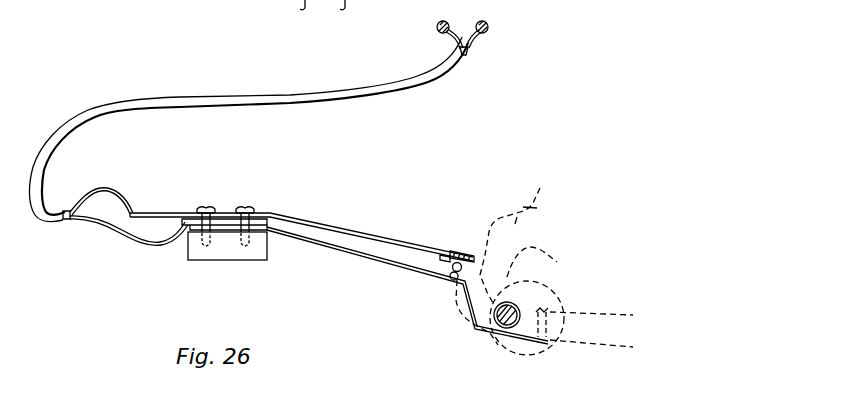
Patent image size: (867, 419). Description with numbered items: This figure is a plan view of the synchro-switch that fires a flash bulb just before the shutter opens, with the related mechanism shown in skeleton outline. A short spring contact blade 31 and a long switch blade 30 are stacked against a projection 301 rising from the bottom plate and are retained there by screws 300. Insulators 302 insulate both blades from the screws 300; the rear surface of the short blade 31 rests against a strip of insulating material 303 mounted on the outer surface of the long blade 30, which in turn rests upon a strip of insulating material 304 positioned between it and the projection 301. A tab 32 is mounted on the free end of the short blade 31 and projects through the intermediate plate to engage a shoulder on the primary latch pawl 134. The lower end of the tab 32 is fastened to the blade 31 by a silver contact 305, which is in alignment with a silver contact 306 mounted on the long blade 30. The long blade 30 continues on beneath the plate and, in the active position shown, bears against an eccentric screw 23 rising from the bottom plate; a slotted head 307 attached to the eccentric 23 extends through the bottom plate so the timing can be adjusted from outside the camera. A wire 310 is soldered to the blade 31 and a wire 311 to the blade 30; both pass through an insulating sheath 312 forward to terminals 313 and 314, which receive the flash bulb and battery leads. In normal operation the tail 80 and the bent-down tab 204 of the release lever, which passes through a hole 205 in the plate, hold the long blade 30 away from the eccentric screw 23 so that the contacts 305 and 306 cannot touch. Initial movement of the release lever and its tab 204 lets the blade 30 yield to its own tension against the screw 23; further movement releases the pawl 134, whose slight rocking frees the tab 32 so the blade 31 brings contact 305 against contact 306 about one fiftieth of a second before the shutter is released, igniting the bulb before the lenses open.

The eccentric screw 23 is at (511, 318).
The long switch blade 30 is at (376, 259).
The short spring contact blade 31 is at (374, 236).
The tab 32 is at (462, 251).
The tail 80 is at (597, 334).
The primary latch pawl 134 is at (504, 259).
The tab 204 is at (567, 303).
The hole 205 is at (528, 349).
The screws 300 is at (212, 208).
The projection 301 is at (243, 262).
The insulators 302 is at (199, 209).
The strip of insulating material 303 is at (223, 220).
The strip of insulating material 304 is at (225, 245).
The silver contact 305 is at (447, 259).
The silver contact 306 is at (462, 274).
The slotted head 307 is at (504, 304).
The wire 310 is at (105, 190).
The wire 311 is at (125, 231).
The insulating sheath 312 is at (182, 106).
The terminal 313 is at (448, 21).
The terminal 314 is at (488, 27).